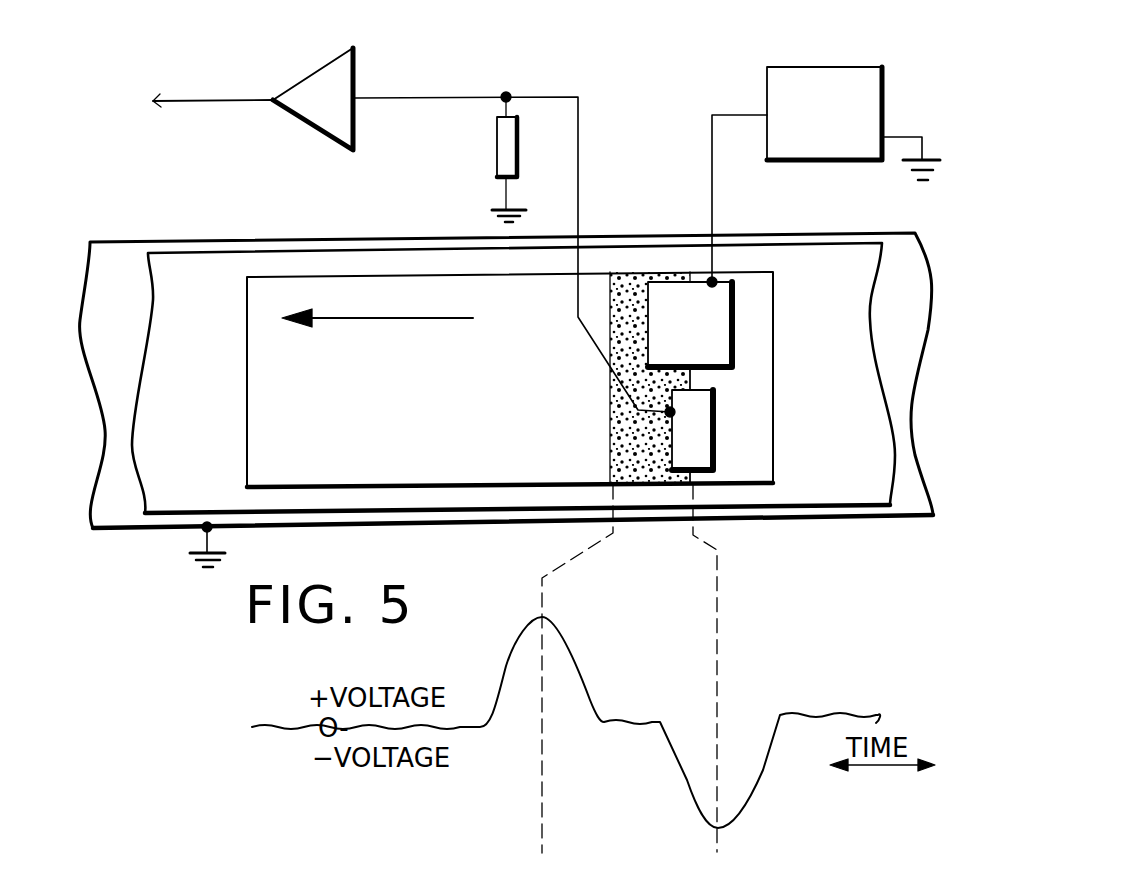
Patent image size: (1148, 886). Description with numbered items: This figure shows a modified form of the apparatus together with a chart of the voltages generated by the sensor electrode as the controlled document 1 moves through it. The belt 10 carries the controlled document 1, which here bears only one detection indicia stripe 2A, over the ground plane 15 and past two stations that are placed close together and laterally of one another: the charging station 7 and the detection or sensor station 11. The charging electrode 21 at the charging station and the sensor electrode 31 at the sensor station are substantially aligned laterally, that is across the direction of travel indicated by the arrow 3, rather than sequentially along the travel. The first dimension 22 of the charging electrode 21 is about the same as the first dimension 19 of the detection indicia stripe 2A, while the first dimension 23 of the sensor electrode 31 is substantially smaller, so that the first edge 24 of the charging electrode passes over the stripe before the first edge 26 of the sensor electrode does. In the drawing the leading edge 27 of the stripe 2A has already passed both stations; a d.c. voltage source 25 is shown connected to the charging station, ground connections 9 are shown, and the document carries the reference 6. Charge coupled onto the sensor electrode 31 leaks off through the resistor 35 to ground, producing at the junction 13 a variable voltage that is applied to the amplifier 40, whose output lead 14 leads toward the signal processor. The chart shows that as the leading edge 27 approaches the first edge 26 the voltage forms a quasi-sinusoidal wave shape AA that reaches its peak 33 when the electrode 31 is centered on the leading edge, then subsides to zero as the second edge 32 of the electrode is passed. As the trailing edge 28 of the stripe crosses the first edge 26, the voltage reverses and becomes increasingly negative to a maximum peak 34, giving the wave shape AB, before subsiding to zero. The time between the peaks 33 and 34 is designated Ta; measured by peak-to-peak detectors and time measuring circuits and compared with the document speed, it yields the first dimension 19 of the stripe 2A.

The controlled document 1 is at (268, 388).
The detection indicia stripe 2A is at (628, 452).
The arrow 3 is at (407, 318).
The document surface 6 is at (386, 445).
The charging station 7 is at (732, 262).
The ground 9 is at (505, 193).
The belt 10 is at (792, 265).
The detection or sensor station 11 is at (713, 492).
The junction 13 is at (507, 96).
The output lead 14 is at (236, 100).
The ground plane 15 is at (122, 248).
The first dimension of detection indicia stripe 19 is at (690, 387).
The charging electrode 21 is at (707, 334).
The first dimension of charging electrode 22 is at (720, 310).
The first dimension of sensor electrode 23 is at (727, 440).
The first edge of charging electrode 24 is at (734, 346).
The d.c. voltage source 25 is at (837, 81).
The first edge of sensor electrode 26 is at (714, 456).
The leading edge of stripe 27 is at (610, 396).
The trailing edge of stripe 28 is at (692, 378).
The sensor electrode 31 is at (694, 418).
The second edge of sensor electrode 32 is at (668, 452).
The peak 33 is at (541, 613).
The maximum negative peak 34 is at (713, 830).
The resistor 35 is at (503, 153).
The amplifier 40 is at (336, 68).
The quasi-sinusoidal wave shape AA is at (516, 646).
The wave shape AB is at (763, 770).
The time between peaks Ta is at (717, 598).